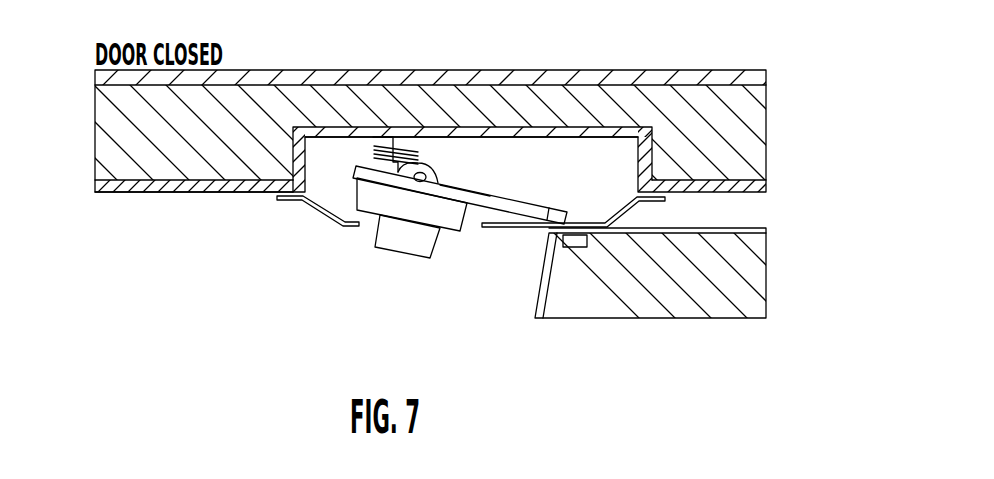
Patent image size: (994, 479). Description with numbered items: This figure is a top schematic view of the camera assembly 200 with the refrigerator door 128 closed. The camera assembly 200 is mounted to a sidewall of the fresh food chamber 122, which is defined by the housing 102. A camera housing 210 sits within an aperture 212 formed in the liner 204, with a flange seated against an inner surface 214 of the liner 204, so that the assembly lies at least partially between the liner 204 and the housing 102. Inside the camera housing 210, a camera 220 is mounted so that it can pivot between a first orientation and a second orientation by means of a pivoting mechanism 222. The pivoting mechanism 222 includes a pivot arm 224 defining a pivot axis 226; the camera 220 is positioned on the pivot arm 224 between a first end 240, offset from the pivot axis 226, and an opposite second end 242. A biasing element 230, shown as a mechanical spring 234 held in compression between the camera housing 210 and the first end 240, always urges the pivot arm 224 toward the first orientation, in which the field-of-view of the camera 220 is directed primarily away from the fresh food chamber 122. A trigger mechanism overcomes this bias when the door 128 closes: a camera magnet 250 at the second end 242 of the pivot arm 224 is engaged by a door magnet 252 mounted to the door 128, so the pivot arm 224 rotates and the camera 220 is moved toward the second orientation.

The housing 102 is at (718, 70).
The fresh food chamber 122 is at (81, 320).
The refrigerator door 128 is at (683, 318).
The camera assembly 200 is at (444, 200).
The liner 204 is at (122, 193).
The camera housing 210 is at (645, 160).
The aperture 212 is at (290, 152).
The inner surface 214 is at (189, 198).
The camera 220 is at (372, 195).
The pivoting mechanism 222 is at (493, 165).
The pivot arm 224 is at (419, 175).
The pivot axis 226 is at (463, 193).
The biasing element 230 is at (380, 147).
The mechanical spring 234 is at (373, 150).
The first end 240 is at (350, 177).
The second end 242 is at (552, 200).
The camera magnet 250 is at (546, 226).
The door magnet 252 is at (587, 243).